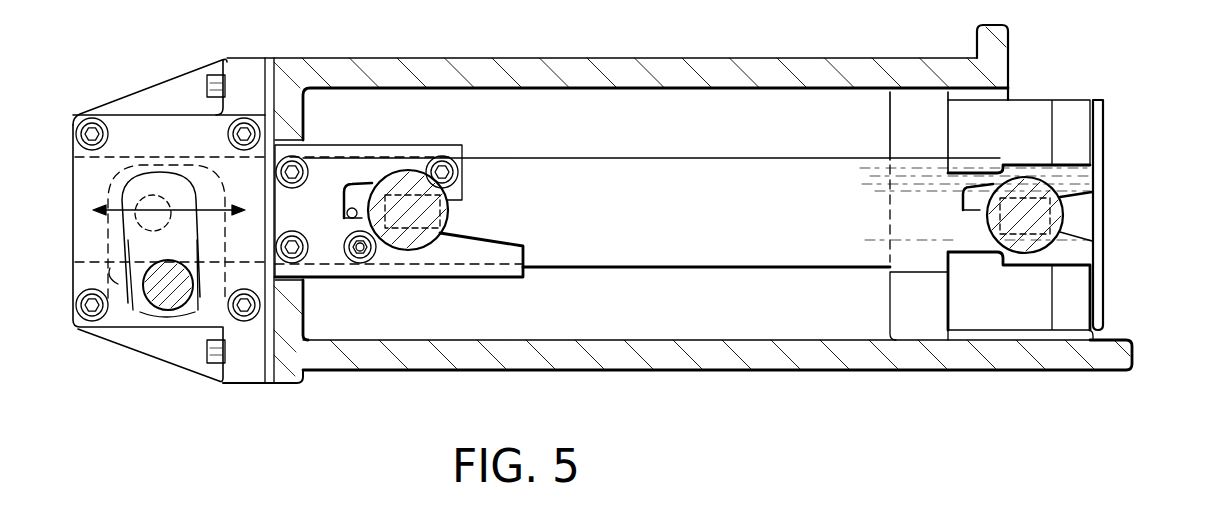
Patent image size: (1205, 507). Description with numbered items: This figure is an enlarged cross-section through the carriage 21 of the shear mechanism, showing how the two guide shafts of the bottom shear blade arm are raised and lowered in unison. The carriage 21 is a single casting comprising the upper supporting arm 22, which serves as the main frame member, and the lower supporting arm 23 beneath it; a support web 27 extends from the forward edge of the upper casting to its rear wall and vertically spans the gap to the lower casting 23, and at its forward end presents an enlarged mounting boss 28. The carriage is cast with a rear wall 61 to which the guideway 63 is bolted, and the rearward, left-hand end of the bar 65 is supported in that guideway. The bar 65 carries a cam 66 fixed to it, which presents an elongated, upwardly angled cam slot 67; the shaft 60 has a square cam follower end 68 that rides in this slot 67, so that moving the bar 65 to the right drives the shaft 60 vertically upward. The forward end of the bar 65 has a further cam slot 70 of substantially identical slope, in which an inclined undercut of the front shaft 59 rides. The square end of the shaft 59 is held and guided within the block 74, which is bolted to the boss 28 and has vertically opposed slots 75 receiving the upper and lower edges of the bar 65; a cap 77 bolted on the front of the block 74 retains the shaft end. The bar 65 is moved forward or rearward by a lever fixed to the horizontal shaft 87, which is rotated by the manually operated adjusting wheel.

The carriage 21 is at (348, 54).
The upper supporting arm 22 is at (577, 78).
The lower supporting arm 23 is at (620, 350).
The support web 27 is at (636, 137).
The mounting boss 28 is at (917, 110).
The front shaft 59 is at (1065, 215).
The shaft 60 is at (440, 226).
The rear wall 61 is at (297, 330).
The guideway 63 is at (160, 95).
The bar 65 is at (636, 222).
The cam 66 is at (370, 150).
The cam slot 67 is at (357, 217).
The square cam follower end 68 is at (468, 205).
The cam slot 70 is at (978, 218).
The block 74 is at (1025, 118).
The vertically opposed slots 75 is at (978, 264).
The cap 77 is at (1075, 118).
The horizontal shaft 87 is at (160, 308).